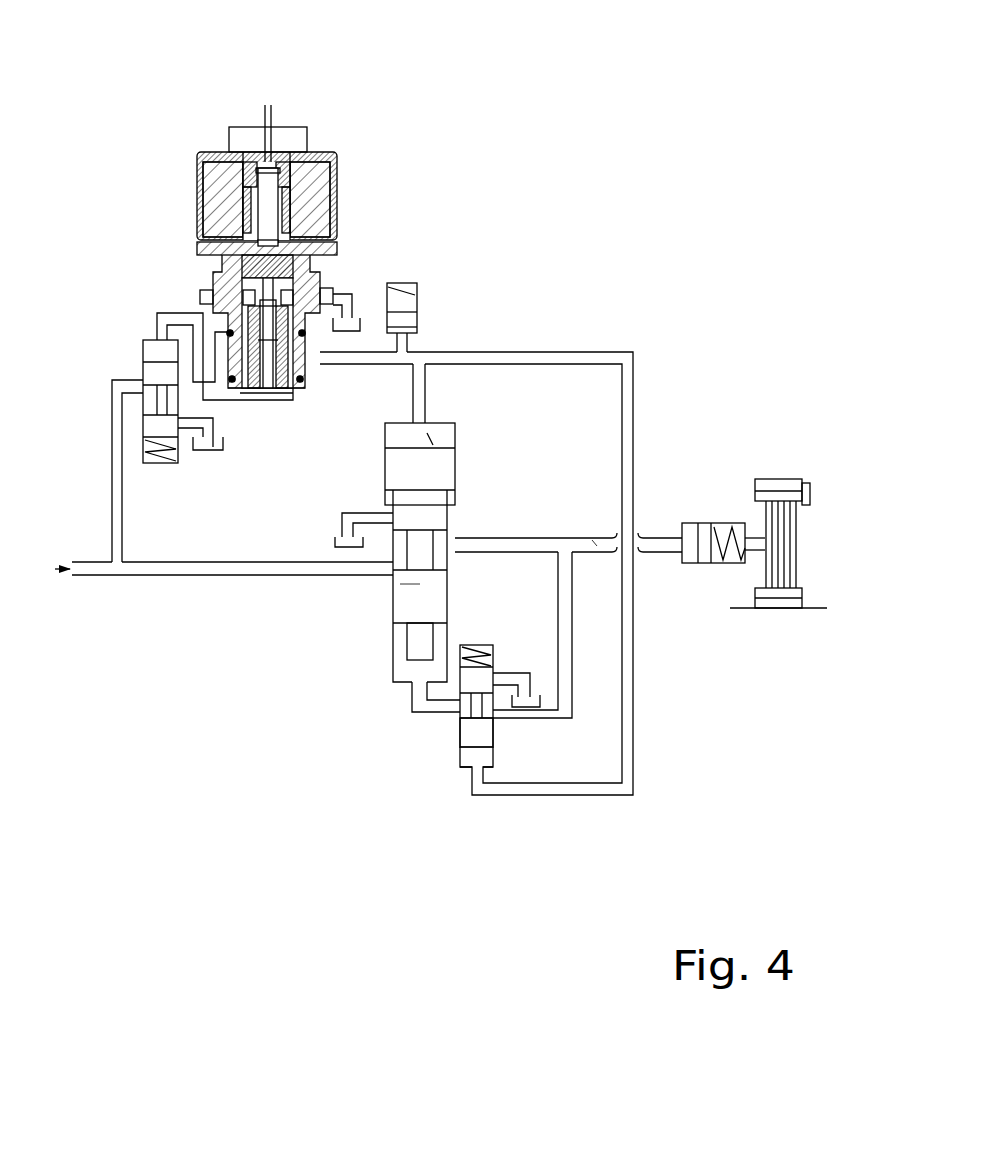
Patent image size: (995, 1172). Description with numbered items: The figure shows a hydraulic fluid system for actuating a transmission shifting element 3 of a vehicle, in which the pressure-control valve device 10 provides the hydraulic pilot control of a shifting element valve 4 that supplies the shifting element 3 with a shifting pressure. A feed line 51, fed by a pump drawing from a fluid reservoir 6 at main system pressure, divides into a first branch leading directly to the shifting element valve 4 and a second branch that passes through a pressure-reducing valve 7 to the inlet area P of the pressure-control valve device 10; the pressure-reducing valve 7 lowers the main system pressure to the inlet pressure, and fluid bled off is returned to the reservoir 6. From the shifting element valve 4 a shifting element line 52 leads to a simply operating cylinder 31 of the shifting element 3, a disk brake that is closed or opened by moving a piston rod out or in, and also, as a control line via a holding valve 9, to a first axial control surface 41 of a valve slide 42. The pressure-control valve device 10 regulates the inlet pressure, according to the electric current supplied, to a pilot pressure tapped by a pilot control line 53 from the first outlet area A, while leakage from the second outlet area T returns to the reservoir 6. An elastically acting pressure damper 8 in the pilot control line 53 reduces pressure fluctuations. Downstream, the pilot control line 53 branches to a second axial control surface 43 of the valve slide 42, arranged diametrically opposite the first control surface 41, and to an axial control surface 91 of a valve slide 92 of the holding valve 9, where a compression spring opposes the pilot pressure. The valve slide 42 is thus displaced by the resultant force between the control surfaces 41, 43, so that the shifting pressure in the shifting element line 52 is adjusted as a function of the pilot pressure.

The transmission shifting element 3 is at (806, 534).
The shifting element valve 4 is at (400, 624).
The fluid reservoir 6 is at (207, 454).
The pressure-reducing valve 7 is at (137, 363).
The pressure damper 8 is at (407, 302).
The holding valve 9 is at (456, 722).
The pressure-control valve device 10 is at (313, 132).
The simply operating cylinder 31 is at (692, 555).
The first axial control surface 41 is at (418, 662).
The valve slide 42 is at (432, 445).
The second axial control surface 43 is at (478, 645).
The feed line 51 is at (94, 571).
The shifting element line 52 is at (597, 548).
The pilot control line 53 is at (412, 357).
The axial control surface 91 is at (484, 747).
The valve slide 92 is at (485, 728).
The inlet area P is at (260, 406).
The first outlet area A is at (318, 368).
The second outlet area T is at (325, 293).